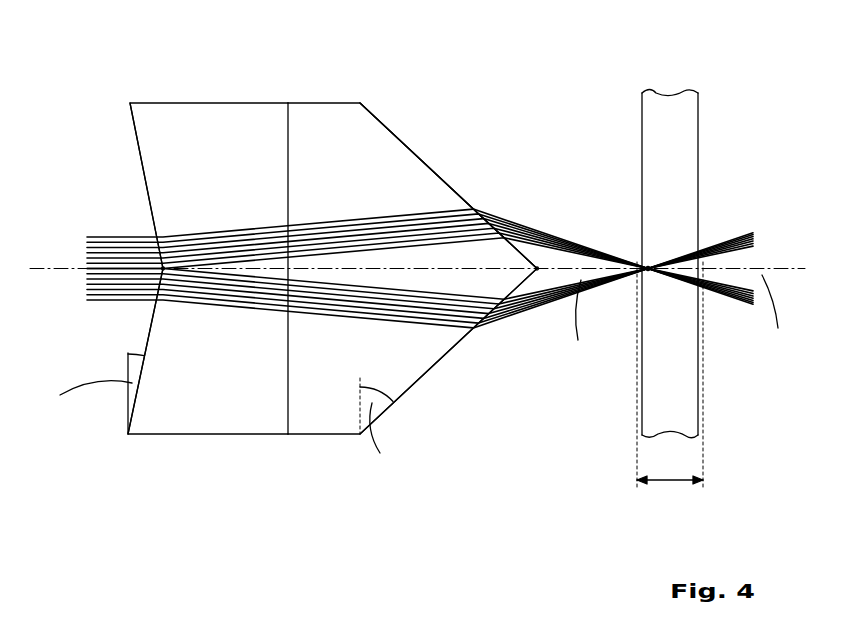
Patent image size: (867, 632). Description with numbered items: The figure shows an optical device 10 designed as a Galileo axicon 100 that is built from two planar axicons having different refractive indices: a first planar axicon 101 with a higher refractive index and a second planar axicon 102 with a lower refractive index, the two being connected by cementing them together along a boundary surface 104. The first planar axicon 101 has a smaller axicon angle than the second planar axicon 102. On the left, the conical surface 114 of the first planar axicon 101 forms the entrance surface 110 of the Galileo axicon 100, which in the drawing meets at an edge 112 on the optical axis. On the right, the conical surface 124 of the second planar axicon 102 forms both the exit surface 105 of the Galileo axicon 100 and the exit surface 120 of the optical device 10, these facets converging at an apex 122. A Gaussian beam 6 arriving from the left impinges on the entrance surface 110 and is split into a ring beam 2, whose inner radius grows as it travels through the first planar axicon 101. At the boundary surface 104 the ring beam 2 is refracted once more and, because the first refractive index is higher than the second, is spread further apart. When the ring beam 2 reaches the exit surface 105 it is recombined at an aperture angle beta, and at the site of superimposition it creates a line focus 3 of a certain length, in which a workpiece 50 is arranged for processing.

The Galileo axicon 100 is at (411, 293).
The optical device 10 is at (302, 320).
The first planar axicon 101 is at (161, 282).
The second planar axicon 102 is at (429, 290).
The boundary surface 104 is at (286, 140).
The exit surface of the Galileo axicon 105 is at (418, 155).
The exit surface of the optical device 120 is at (448, 186).
The conical surface of the second planar axicon 124 is at (449, 352).
The apex edge 122 is at (533, 266).
The entrance surface 110 is at (136, 140).
The conical surface of the first planar axicon 114 is at (148, 328).
The entrance edge 112 is at (167, 273).
The Gaussian beam 6 is at (118, 250).
The ring beam 2 is at (368, 227).
The line focus 3 is at (680, 257).
The workpiece 50 is at (685, 132).